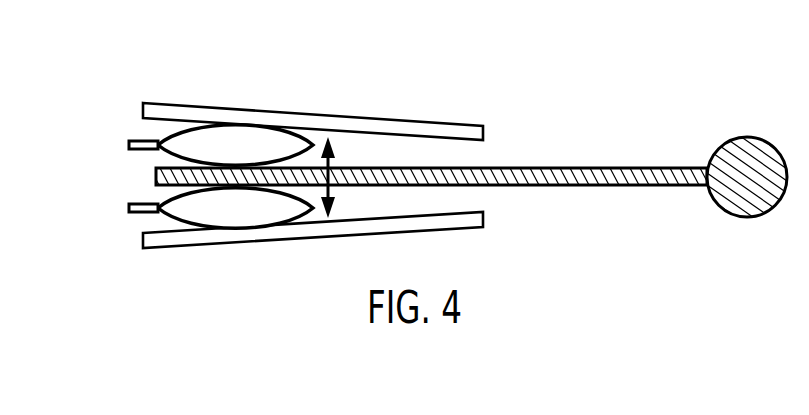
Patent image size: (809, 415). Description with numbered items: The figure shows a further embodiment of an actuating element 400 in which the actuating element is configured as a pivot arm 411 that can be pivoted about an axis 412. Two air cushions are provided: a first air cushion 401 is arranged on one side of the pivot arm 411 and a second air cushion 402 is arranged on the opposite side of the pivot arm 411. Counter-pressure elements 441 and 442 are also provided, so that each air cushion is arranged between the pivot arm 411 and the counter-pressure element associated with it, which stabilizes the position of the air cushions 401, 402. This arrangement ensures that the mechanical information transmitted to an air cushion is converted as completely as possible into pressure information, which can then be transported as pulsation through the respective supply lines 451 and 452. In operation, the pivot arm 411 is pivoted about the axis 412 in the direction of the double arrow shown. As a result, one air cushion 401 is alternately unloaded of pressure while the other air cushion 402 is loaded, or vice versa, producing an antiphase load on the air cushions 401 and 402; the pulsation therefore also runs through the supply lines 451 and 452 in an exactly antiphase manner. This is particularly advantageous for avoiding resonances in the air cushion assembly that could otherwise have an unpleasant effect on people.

The actuating element 400 is at (576, 103).
The first air cushion 401 is at (193, 215).
The second air cushion 402 is at (192, 137).
The pivot arm 411 is at (588, 187).
The axis 412 is at (742, 148).
The counter-pressure element 441 is at (300, 235).
The counter-pressure element 442 is at (392, 122).
The supply line 451 is at (128, 208).
The supply line 452 is at (128, 145).